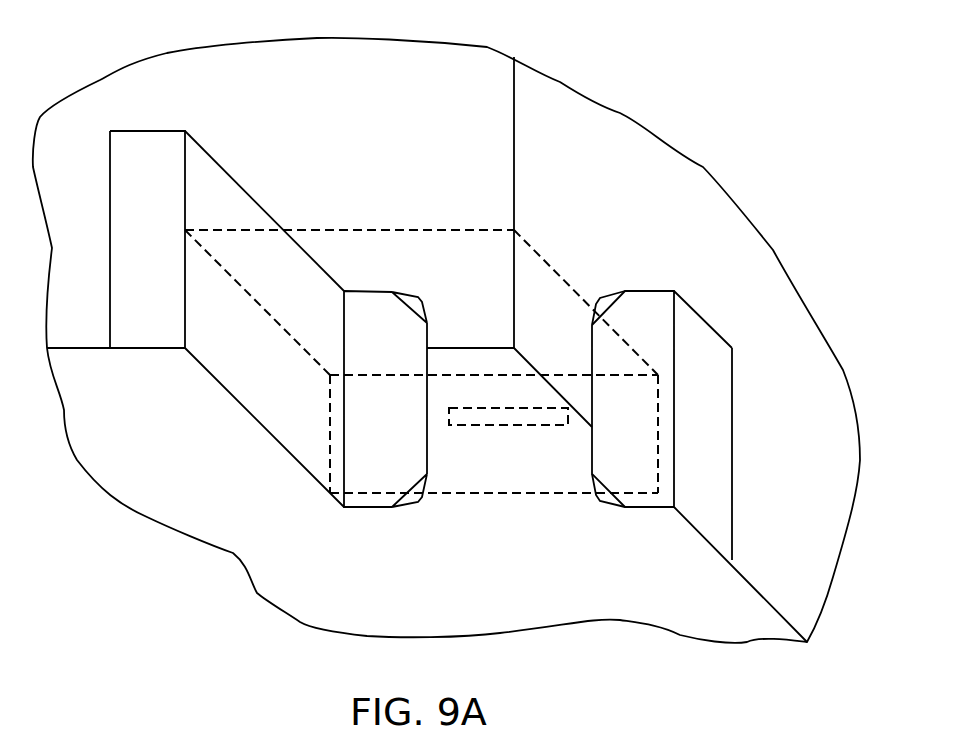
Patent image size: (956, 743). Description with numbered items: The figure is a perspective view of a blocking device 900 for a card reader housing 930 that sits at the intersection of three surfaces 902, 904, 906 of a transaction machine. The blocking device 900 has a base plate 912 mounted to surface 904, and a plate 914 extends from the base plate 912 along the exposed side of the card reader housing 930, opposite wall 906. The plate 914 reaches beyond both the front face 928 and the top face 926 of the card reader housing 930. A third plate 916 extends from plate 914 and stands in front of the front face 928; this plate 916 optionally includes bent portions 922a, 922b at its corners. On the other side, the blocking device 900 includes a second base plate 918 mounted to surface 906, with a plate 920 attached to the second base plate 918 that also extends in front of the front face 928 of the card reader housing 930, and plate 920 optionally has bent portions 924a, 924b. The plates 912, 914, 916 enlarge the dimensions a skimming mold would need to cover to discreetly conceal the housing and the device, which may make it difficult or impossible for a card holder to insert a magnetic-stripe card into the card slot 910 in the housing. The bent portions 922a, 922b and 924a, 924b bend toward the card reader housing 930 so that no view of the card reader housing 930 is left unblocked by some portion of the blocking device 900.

The blocking device 900 is at (83, 70).
The surface 902 is at (403, 595).
The surface 904 is at (396, 95).
The surface 906 is at (706, 233).
The card slot 910 is at (508, 417).
The base plate 912 is at (169, 251).
The plate 914 is at (230, 187).
The third plate 916 is at (413, 448).
The second base plate 918 is at (722, 452).
The plate 920 is at (660, 298).
The bent portion 922a is at (412, 295).
The bent portion 922b is at (410, 500).
The bent portion 924a is at (606, 298).
The bent portion 924b is at (603, 497).
The top face 926 is at (542, 267).
The front face 928 is at (552, 477).
The card reader housing 930 is at (458, 247).